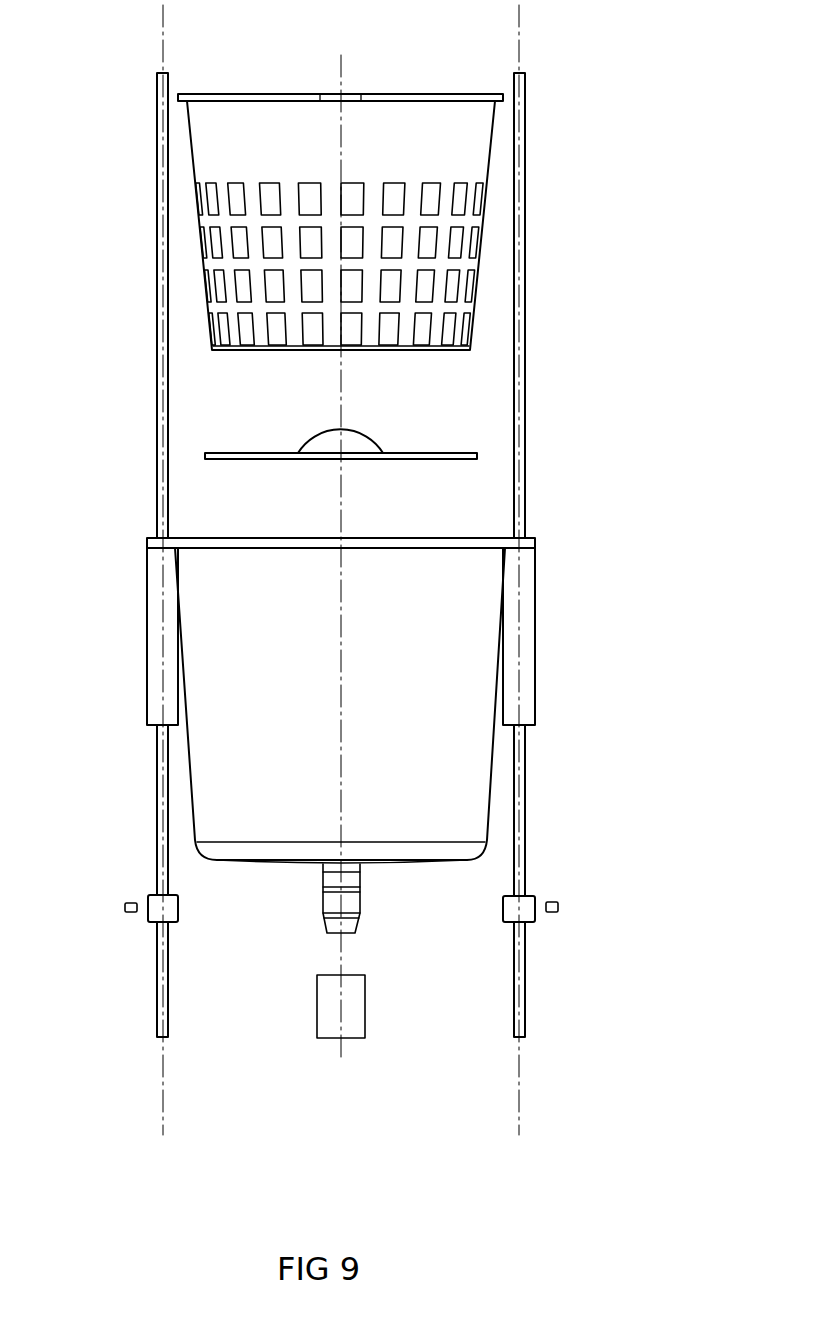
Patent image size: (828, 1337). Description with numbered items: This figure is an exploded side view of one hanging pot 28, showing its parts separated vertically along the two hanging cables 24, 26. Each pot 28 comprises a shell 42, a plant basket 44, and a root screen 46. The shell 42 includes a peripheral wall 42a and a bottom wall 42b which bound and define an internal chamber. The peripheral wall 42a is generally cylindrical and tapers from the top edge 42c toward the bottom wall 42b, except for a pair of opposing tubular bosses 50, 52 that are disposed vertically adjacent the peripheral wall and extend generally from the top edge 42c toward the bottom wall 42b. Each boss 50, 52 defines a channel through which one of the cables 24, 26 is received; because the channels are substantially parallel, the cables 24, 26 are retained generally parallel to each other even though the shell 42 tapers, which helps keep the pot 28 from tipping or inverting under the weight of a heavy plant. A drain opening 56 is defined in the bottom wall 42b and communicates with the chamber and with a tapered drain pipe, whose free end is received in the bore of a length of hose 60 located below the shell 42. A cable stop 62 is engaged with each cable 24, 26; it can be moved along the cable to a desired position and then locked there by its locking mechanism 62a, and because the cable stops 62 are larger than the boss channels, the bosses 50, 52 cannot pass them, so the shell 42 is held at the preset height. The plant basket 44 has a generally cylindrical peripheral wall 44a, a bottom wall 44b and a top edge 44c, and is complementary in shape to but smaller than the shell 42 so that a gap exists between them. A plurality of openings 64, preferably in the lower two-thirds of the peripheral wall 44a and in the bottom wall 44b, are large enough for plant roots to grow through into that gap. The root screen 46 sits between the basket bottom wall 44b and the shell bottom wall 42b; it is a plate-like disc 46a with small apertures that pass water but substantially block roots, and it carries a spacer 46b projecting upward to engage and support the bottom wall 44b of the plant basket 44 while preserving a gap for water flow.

The cable 24 is at (160, 422).
The cable 26 is at (525, 351).
The pot 28 is at (624, 523).
The shell 42 is at (355, 713).
The peripheral wall 42a is at (295, 763).
The bottom wall 42b is at (273, 861).
The top edge 42c is at (273, 543).
The plant basket 44 is at (384, 225).
The peripheral wall 44a is at (462, 137).
The bottom wall 44b is at (408, 350).
The top edge 44c is at (412, 98).
The root screen 46 is at (397, 437).
The plate-like disc 46a is at (247, 453).
The spacer 46b is at (328, 436).
The tubular boss 50 is at (157, 673).
The tubular boss 52 is at (527, 645).
The drain opening 56 is at (350, 900).
The hose 60 is at (355, 1008).
The cable stop 62 is at (155, 918).
The clamp set screw 62a is at (125, 910).
The openings 64 is at (383, 241).